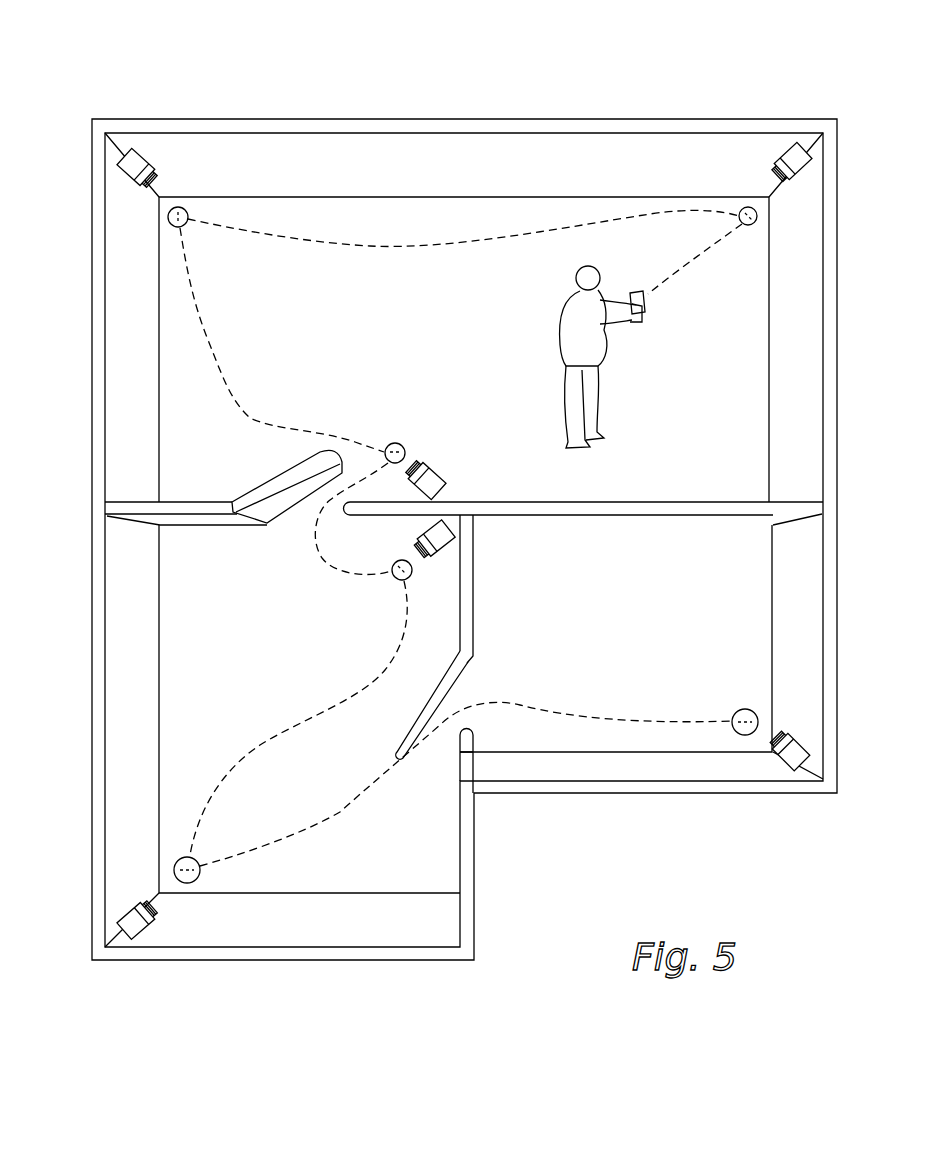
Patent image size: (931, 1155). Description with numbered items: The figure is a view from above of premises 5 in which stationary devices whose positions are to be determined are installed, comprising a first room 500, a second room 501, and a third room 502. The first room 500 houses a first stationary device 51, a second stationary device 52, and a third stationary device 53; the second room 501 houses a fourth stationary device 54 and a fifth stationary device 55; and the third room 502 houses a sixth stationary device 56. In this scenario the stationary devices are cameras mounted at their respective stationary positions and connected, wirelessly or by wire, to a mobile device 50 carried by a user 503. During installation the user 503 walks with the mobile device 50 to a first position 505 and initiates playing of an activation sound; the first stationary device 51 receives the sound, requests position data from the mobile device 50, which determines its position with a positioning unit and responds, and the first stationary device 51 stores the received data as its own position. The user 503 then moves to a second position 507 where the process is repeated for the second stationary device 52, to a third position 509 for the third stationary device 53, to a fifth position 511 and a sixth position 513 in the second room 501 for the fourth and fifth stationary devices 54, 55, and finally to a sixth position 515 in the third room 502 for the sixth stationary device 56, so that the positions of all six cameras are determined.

The surveillance system / monitored premises 5 is at (543, 80).
The mobile device 50 is at (646, 300).
The first stationary device 51 is at (797, 155).
The second stationary device 52 is at (134, 150).
The third stationary device 53 is at (443, 474).
The fourth stationary device 54 is at (452, 537).
The fifth stationary device 55 is at (133, 930).
The sixth stationary device 56 is at (794, 767).
The first room 500 is at (193, 400).
The second room 501 is at (210, 680).
The third room 502 is at (543, 725).
The user 503 is at (599, 345).
The first position 505 is at (749, 206).
The second position 507 is at (176, 206).
The third position 509 is at (396, 443).
The fifth position 511 is at (394, 578).
The sixth position 513 is at (189, 883).
The sixth position 515 is at (745, 735).